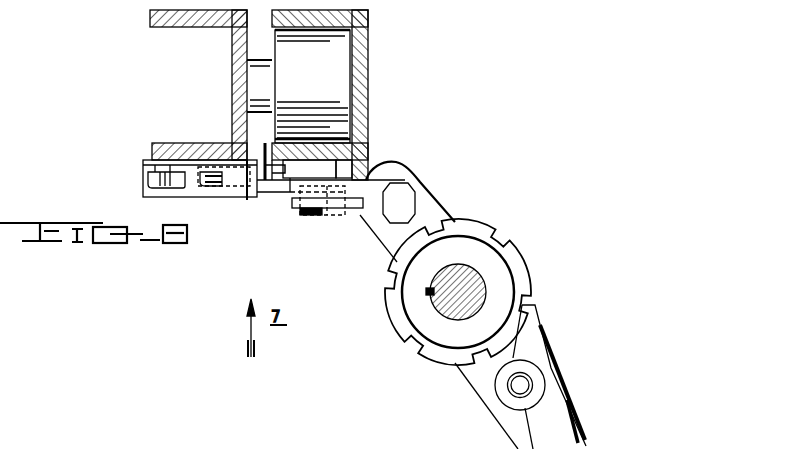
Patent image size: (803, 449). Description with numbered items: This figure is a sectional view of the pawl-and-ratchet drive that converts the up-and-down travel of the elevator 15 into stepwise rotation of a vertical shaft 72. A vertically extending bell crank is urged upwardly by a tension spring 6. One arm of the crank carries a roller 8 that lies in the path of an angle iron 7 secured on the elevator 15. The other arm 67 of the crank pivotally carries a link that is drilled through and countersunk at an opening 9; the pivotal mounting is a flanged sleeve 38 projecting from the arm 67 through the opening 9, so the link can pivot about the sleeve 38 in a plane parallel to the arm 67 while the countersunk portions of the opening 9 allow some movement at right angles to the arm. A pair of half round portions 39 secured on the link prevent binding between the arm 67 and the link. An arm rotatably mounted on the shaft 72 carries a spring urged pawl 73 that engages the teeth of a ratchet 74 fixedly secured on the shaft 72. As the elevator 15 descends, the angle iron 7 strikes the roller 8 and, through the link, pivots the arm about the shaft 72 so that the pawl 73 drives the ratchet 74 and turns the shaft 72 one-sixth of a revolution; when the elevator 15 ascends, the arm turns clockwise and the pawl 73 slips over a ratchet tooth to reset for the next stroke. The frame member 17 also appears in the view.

The tension spring 6 is at (270, 160).
The angle iron 7 is at (145, 189).
The roller 8 is at (250, 197).
The opening 9 is at (327, 205).
The elevator 15 is at (170, 18).
The right frame member 17 is at (368, 18).
The flanged sleeve 38 is at (300, 210).
The half round portions 39 is at (307, 198).
The arm 67 is at (342, 178).
The vertical shaft 72 is at (483, 280).
The pawl 73 is at (528, 324).
The ratchet 74 is at (522, 284).